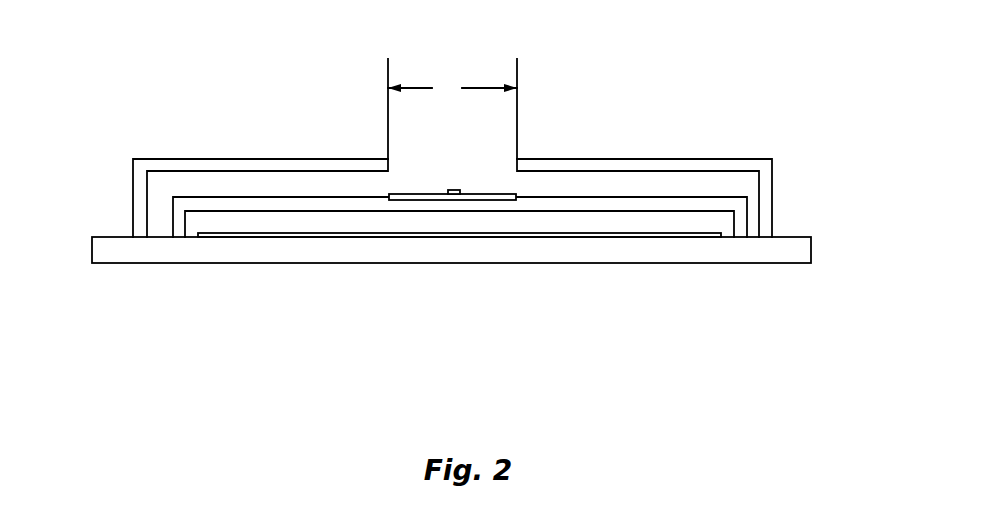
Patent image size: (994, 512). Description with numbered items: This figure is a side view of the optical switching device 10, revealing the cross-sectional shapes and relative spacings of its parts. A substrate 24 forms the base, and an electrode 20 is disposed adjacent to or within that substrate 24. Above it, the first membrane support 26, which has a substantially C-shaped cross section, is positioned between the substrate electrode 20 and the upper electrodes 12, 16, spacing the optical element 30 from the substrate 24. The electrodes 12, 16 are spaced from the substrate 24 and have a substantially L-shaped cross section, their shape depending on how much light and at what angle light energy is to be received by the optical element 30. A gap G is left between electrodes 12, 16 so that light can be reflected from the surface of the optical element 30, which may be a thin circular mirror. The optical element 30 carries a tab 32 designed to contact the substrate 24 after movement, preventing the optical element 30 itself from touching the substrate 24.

The optical switching device 10 is at (645, 26).
The electrode 12 is at (224, 163).
The electrode 16 is at (571, 165).
The electrode 20 is at (357, 234).
The substrate 24 is at (492, 250).
The first membrane support 26 is at (592, 202).
The optical element 30 is at (399, 193).
The tab 32 is at (451, 189).